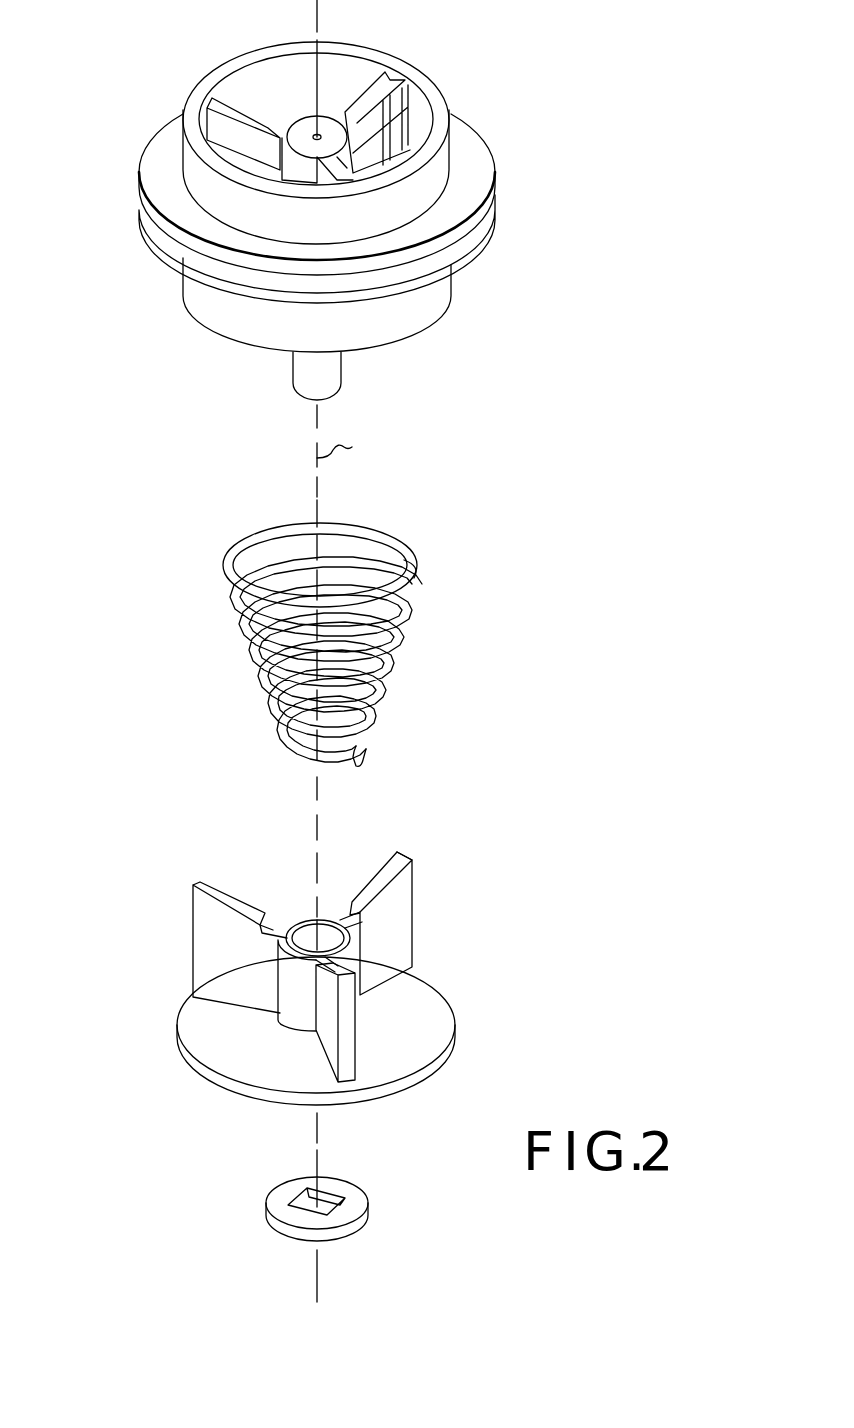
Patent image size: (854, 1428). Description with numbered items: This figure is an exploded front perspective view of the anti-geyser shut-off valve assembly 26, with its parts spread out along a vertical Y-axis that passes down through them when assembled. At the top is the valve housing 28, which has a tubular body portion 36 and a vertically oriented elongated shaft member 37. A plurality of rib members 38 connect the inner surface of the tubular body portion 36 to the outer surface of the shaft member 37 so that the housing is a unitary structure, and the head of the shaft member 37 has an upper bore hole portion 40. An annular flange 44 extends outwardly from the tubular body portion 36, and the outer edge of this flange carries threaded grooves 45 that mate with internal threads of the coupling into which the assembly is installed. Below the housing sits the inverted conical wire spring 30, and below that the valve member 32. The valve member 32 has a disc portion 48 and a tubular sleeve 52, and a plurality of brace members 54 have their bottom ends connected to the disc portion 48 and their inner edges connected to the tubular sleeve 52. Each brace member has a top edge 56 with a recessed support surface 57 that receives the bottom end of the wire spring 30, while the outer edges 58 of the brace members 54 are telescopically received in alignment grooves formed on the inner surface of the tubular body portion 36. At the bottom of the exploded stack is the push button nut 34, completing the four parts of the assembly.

The anti-geyser shut-off valve assembly 26 is at (614, 590).
The valve housing 28 is at (515, 172).
The inverted conical wire spring 30 is at (400, 642).
The valve member 32 is at (457, 994).
The push button nut 34 is at (267, 1207).
The tubular body portion 36 is at (336, 237).
The shaft member 37 is at (323, 372).
The rib members 38 is at (232, 133).
The upper bore hole portion 40 is at (315, 133).
The annular flange 44 is at (170, 173).
The threaded grooves 45 is at (150, 214).
The disc portion 48 is at (420, 1037).
The tubular sleeve 52 is at (293, 1008).
The brace members 54 is at (238, 984).
The top edge 56 is at (377, 878).
The recessed support surface 57 is at (278, 928).
The outer edges 58 is at (347, 1045).